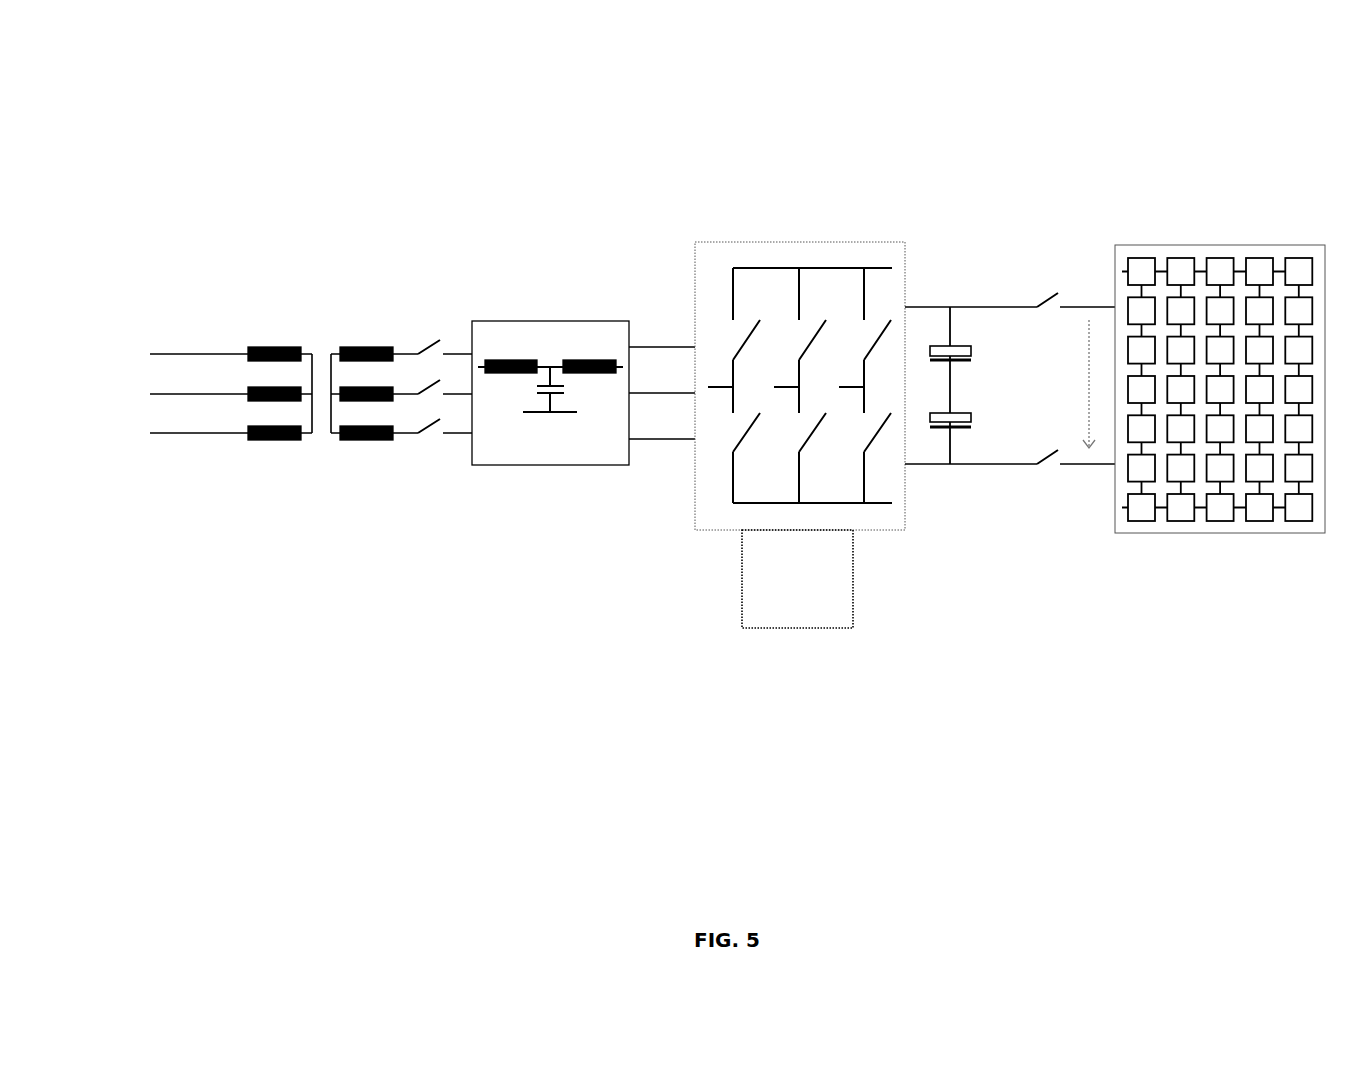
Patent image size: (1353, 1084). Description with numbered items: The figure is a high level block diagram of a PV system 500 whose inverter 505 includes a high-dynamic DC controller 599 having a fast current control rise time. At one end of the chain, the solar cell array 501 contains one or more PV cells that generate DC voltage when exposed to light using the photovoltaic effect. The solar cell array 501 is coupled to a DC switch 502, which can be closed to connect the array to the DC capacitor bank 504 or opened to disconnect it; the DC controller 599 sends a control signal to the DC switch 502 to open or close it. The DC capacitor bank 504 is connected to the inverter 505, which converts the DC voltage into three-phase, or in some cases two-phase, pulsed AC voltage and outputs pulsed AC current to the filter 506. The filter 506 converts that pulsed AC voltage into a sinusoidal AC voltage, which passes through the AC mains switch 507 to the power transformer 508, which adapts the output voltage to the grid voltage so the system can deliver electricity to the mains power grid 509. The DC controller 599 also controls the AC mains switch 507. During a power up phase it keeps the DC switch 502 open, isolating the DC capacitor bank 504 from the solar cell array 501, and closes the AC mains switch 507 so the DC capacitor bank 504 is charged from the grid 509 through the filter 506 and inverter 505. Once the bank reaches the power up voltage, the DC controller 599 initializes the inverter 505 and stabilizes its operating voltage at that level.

The PV system 500 is at (712, 443).
The solar cell array 501 is at (1213, 229).
The DC switch 502 is at (1076, 282).
The DC capacitor bank 504 is at (953, 268).
The inverter 505 is at (755, 224).
The filter 506 is at (540, 281).
The AC mains switch 507 is at (413, 312).
The power transformer 508 is at (308, 319).
The mains power grid 509 is at (165, 314).
The high-dynamic DC controller 599 is at (722, 600).